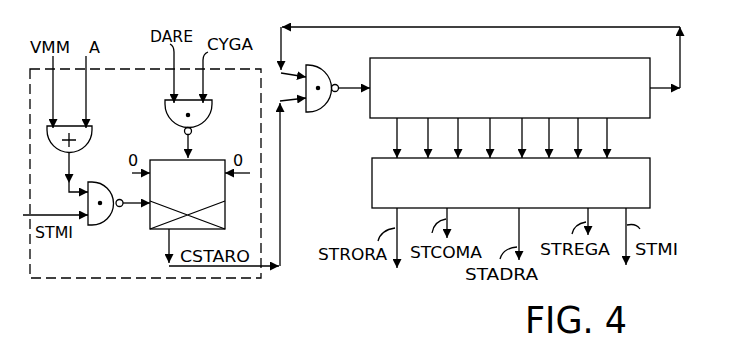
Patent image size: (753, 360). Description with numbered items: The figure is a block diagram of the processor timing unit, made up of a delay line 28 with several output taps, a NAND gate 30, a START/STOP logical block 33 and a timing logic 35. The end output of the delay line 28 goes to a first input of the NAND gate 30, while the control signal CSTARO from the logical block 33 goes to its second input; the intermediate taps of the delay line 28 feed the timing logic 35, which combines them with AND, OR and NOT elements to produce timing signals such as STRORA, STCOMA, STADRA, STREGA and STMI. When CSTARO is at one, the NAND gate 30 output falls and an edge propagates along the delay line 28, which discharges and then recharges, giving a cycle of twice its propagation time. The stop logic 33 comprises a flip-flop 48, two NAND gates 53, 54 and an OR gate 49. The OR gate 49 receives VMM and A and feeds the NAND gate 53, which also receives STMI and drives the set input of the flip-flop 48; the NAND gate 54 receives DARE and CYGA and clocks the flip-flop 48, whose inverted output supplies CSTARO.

The delay line 28 is at (490, 58).
The NAND gate 30 is at (322, 65).
The stop logic 33 is at (188, 278).
The timing logic 35 is at (372, 180).
The flip-flop 48 is at (153, 160).
The OR gate 49 is at (58, 152).
The NAND gate 53 is at (100, 226).
The NAND gate 54 is at (210, 113).